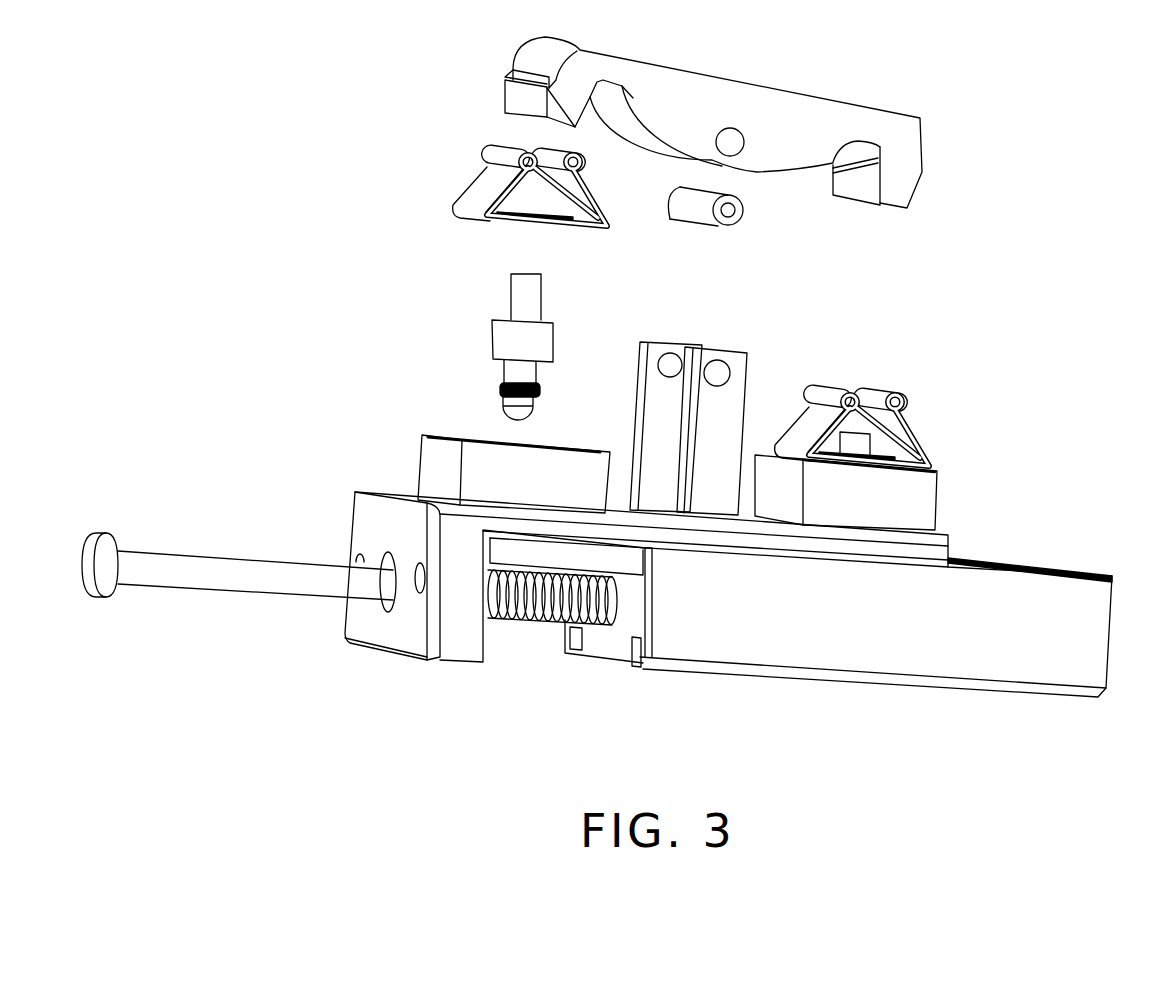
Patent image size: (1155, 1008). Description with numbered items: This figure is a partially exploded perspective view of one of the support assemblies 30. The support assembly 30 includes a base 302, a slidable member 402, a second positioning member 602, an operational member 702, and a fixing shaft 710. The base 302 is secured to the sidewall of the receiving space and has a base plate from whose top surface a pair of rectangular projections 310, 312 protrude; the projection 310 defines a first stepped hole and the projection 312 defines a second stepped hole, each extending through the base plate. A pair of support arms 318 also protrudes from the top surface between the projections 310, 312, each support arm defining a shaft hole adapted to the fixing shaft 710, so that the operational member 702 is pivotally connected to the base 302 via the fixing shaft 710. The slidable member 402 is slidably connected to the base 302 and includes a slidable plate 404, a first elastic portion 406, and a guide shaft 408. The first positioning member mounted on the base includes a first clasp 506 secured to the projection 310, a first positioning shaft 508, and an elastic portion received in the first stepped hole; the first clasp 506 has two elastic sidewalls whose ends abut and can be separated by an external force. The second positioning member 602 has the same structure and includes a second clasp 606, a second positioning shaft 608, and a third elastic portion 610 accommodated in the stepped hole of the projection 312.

The support assembly 30 is at (368, 131).
The operational member 702 is at (787, 118).
The fixing shaft 710 is at (705, 217).
The second clasp 606 is at (475, 205).
The second positioning member 602 is at (376, 240).
The second positioning shaft 608 is at (517, 360).
The third elastic portion 610 is at (500, 387).
The support arms 318 is at (725, 400).
The projection 312 is at (438, 456).
The projection 310 is at (905, 490).
The first positioning shaft 508 is at (860, 440).
The first clasp 506 is at (905, 434).
The base 302 is at (373, 525).
The slidable plate 404 is at (670, 635).
The first elastic portion 406 is at (520, 615).
The guide shaft 408 is at (353, 585).
The slidable member 402 is at (602, 726).